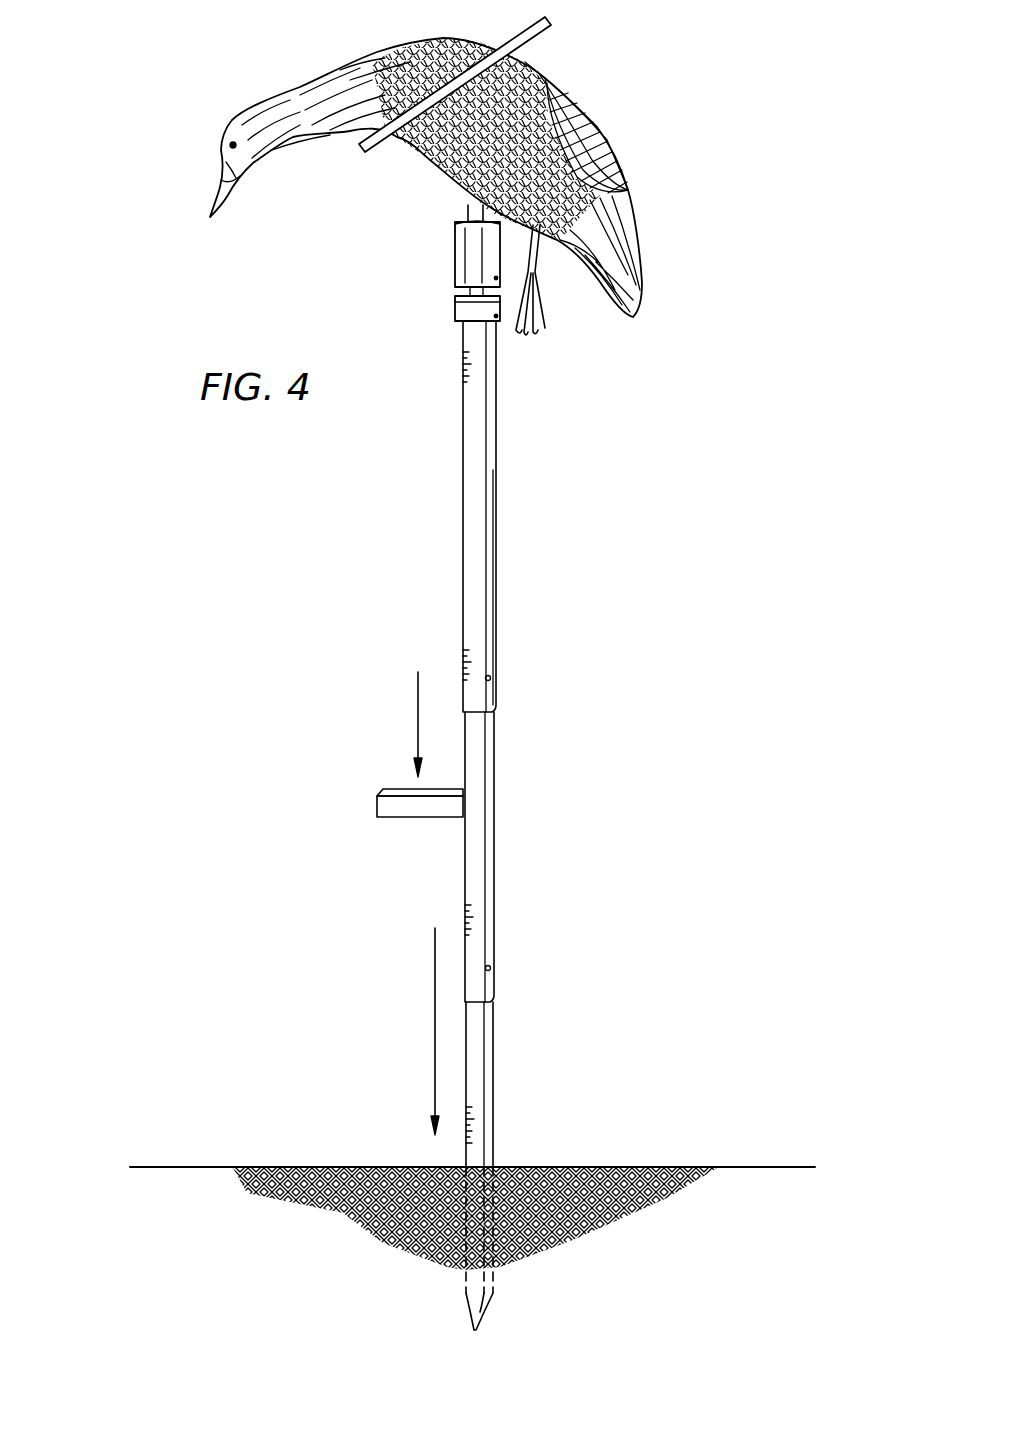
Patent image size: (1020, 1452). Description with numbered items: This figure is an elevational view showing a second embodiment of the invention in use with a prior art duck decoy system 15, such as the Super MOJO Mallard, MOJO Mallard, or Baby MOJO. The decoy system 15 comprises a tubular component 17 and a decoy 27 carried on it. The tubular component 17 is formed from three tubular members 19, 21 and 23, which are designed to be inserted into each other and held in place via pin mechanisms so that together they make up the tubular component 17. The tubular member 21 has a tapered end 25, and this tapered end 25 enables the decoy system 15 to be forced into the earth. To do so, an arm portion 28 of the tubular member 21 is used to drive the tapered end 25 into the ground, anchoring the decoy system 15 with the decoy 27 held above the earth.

The duck decoy system 15 is at (113, 110).
The tubular component 17 is at (454, 552).
The tubular member 19 is at (495, 463).
The tubular member 21 is at (495, 888).
The tubular member 23 is at (493, 1063).
The tapered end 25 is at (482, 1317).
The decoy 27 is at (385, 53).
The arm portion 28 is at (402, 820).